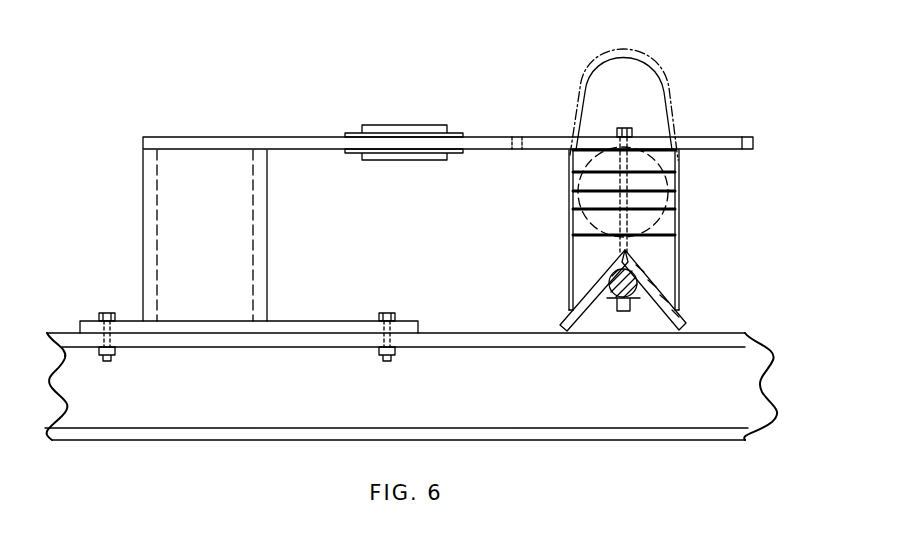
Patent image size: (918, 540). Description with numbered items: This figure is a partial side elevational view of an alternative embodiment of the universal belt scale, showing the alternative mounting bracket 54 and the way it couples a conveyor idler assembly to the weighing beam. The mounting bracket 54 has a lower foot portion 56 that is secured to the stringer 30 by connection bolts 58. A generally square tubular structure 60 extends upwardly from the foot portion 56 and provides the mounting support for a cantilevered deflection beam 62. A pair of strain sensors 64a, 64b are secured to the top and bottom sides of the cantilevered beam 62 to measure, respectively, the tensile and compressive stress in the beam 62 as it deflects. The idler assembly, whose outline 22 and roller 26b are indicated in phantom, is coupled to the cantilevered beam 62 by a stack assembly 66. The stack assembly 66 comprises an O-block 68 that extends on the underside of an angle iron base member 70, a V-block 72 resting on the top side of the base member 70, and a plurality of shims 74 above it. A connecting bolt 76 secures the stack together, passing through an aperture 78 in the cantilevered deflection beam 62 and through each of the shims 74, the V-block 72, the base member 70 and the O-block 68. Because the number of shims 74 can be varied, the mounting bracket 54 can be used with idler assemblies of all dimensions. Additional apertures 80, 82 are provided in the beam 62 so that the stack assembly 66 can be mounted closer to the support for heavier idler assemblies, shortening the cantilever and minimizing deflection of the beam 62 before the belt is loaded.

The aircraft outline 22 is at (646, 42).
The radome 26b is at (592, 80).
The stringer 30 is at (600, 434).
The mounting bracket 54 is at (132, 122).
The lower foot portion 56 is at (320, 326).
The connection bolts 58 is at (107, 312).
The square tubular structure 60 is at (150, 208).
The cantilevered deflection beam 62 is at (304, 142).
The strain sensor 64a is at (400, 130).
The strain sensor 64b is at (398, 158).
The stack assembly 66 is at (546, 198).
The O-block 68 is at (614, 296).
The angle iron base member 70 is at (566, 315).
The V-block 72 is at (666, 258).
The shims 74 is at (682, 210).
The connecting bolt 76 is at (636, 303).
The aperture 78 is at (634, 142).
The aperture 80 is at (514, 143).
The aperture 82 is at (736, 127).